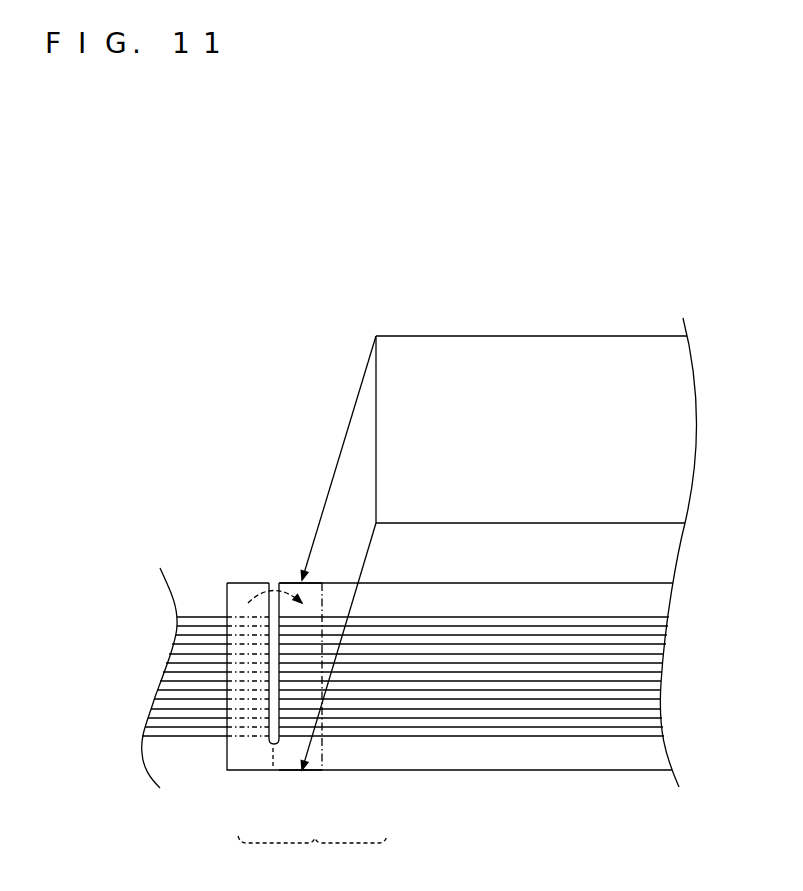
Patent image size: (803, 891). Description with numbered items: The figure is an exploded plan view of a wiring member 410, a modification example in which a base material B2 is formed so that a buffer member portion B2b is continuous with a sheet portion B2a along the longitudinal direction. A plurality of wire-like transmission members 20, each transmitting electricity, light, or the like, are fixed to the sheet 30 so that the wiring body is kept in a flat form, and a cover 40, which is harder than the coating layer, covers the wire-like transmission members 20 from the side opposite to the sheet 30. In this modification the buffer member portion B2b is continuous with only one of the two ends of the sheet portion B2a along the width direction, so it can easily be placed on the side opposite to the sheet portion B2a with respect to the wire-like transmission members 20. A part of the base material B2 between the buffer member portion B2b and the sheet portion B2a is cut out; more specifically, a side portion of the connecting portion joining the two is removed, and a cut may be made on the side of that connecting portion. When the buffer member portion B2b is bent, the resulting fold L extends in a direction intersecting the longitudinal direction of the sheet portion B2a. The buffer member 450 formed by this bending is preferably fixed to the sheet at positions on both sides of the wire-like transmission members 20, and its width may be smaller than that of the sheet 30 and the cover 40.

The wiring member 410 is at (195, 222).
The cover 40 is at (552, 355).
The sheet 30 is at (568, 763).
The wire-like transmission member 20 is at (210, 640).
The buffer member 450 is at (323, 603).
The fold L is at (273, 745).
The buffer member portion B2b is at (250, 760).
The sheet portion B2a is at (359, 770).
The base material B2 is at (312, 858).